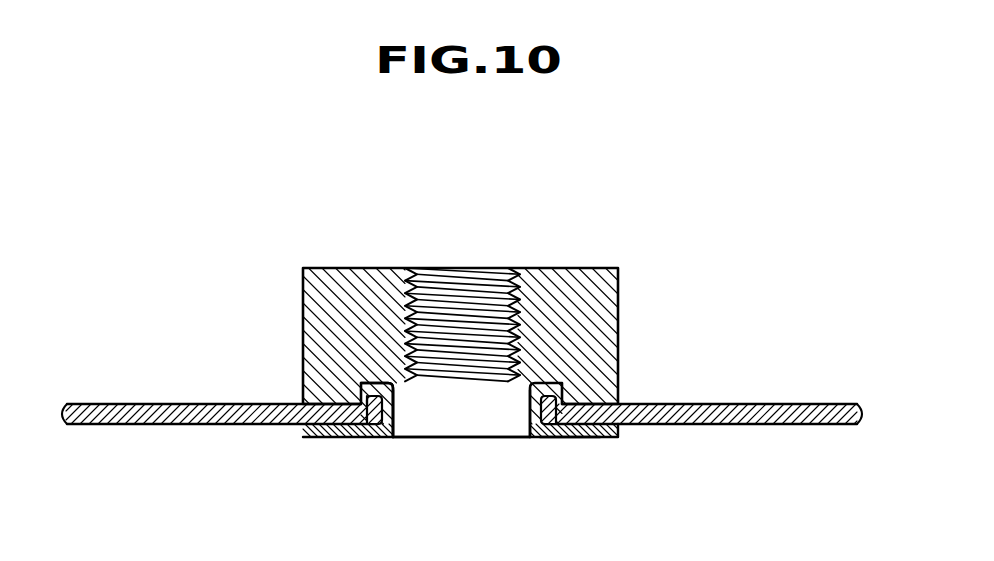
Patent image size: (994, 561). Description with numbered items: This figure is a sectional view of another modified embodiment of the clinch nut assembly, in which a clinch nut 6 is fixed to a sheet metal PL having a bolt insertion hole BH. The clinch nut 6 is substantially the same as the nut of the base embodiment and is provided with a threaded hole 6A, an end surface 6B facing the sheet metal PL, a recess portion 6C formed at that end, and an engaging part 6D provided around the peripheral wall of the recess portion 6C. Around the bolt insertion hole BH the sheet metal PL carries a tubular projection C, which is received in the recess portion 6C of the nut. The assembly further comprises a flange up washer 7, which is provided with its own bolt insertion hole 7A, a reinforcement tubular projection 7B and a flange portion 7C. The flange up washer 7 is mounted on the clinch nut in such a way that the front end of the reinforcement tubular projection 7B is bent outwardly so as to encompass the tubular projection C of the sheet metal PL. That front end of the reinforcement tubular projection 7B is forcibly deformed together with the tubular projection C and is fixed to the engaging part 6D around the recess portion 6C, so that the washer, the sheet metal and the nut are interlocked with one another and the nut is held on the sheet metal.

The clinch nut 6 is at (648, 292).
The threaded hole 6A is at (464, 302).
The end surface 6B is at (588, 440).
The recess portion 6C is at (525, 385).
The engaging part 6D is at (567, 398).
The flange up washer 7 is at (342, 440).
The bolt insertion hole 7A is at (400, 406).
The reinforcement tubular projection 7B is at (362, 394).
The flange portion 7C is at (555, 440).
The bolt insertion hole BH is at (423, 413).
The tubular projection C is at (364, 398).
The sheet metal PL is at (813, 420).